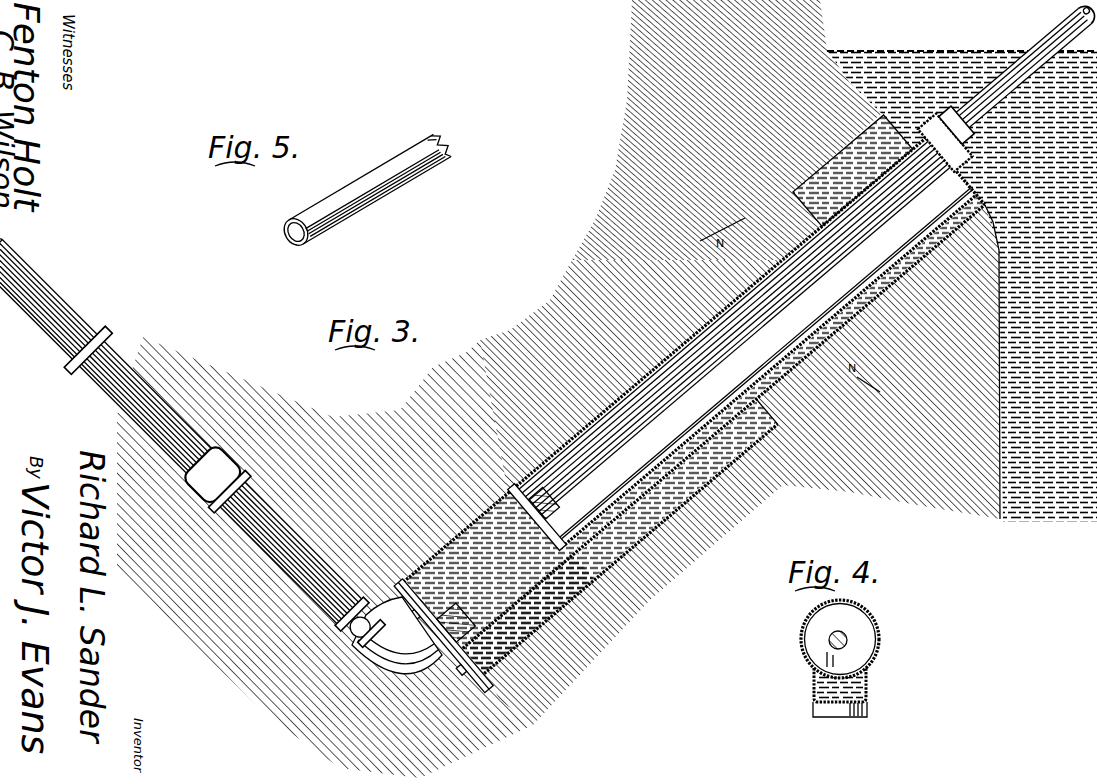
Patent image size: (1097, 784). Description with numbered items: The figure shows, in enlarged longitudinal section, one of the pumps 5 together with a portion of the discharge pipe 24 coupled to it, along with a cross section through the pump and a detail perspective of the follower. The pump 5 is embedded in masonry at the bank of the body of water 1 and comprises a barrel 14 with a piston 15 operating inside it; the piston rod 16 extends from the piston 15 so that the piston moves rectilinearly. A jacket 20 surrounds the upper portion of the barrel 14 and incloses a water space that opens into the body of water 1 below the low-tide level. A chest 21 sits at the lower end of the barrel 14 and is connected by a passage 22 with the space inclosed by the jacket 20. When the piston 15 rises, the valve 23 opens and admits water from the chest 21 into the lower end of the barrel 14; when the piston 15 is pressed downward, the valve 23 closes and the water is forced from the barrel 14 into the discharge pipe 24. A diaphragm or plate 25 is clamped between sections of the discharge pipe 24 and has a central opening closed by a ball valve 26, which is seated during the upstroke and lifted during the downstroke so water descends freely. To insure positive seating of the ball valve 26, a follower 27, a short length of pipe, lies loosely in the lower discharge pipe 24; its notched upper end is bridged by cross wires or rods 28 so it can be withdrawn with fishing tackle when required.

In FIG. 3, the body of water 1 is at (962, 274).
In FIG. 3, the pump 5 is at (558, 389).
In FIG. 3, the barrel 14 is at (688, 393).
In FIG. 4, the barrel 14 is at (864, 639).
In FIG. 3, the piston 15 is at (540, 491).
In FIG. 3, the piston rod 16 is at (806, 258).
In FIG. 4, the piston rod 16 is at (877, 654).
In FIG. 3, the jacket 20 is at (889, 169).
In FIG. 3, the chest 21 is at (703, 420).
In FIG. 4, the chest 21 is at (870, 701).
In FIG. 3, the passage 22 is at (705, 405).
In FIG. 4, the passage 22 is at (810, 704).
In FIG. 3, the valve 23 is at (526, 639).
In FIG. 3, the discharge pipe 24 is at (185, 430).
In FIG. 3, the diaphragm or plate 25 is at (333, 645).
In FIG. 3, the ball valve 26 is at (397, 604).
In FIG. 3, the follower 27 is at (247, 476).
In FIG. 5, the follower 27 is at (365, 190).
In FIG. 3, the cross wires or rods 28 is at (199, 529).
In FIG. 5, the cross wires or rods 28 is at (463, 130).